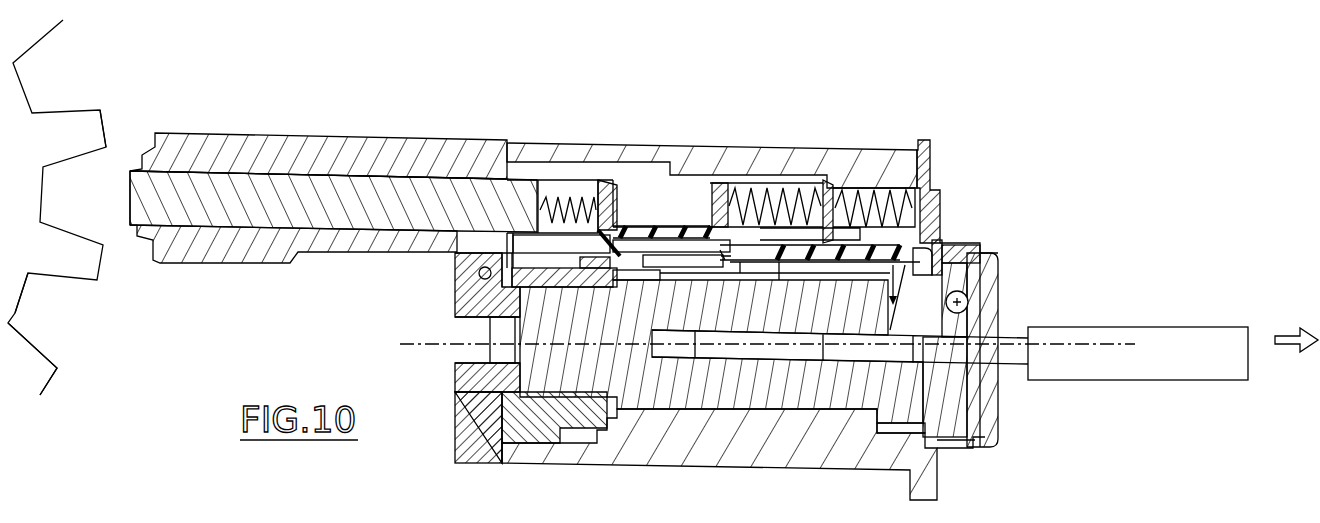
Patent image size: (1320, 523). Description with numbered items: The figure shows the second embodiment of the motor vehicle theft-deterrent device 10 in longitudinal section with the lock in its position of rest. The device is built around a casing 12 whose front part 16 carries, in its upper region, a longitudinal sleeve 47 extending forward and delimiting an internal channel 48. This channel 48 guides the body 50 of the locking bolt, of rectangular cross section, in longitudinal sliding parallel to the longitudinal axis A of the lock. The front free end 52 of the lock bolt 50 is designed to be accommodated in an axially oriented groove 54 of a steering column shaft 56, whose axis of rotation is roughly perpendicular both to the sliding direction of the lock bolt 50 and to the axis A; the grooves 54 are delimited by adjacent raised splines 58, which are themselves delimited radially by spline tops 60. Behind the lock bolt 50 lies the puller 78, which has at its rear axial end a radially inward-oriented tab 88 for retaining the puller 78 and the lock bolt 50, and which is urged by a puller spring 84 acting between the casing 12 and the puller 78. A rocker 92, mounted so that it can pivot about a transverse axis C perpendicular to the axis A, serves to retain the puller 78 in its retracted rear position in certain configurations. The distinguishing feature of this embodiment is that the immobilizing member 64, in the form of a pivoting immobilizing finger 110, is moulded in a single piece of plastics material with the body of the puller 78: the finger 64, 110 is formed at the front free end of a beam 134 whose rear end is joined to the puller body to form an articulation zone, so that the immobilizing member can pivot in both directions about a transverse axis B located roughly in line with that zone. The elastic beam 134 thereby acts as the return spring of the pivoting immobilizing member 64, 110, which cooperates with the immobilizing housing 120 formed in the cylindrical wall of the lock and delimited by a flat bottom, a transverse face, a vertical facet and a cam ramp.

The motor vehicle theft-deterrent device 10 is at (691, 280).
The casing 12 is at (603, 125).
The front part 16 is at (273, 133).
The longitudinal sleeve 47 is at (230, 247).
The internal channel 48 is at (237, 188).
The body of the locking bolt 50 is at (187, 200).
The front free end of the lock bolt 52 is at (137, 207).
The groove 54 is at (18, 313).
The steering column shaft 56 is at (60, 385).
The raised splines 58 is at (68, 128).
The spline tops 60 is at (107, 122).
The immobilizing member 64 is at (638, 257).
The puller 78 is at (779, 268).
The puller spring 84 is at (798, 185).
The retaining tab 88 is at (952, 263).
The rocker 92 is at (923, 383).
The immobilizing finger 110 is at (663, 277).
The immobilizing housing 120 is at (567, 255).
The beam 134 is at (683, 252).
The longitudinal axis A is at (1079, 353).
The transverse axis B is at (731, 258).
The transverse axis of the rocker C is at (958, 318).